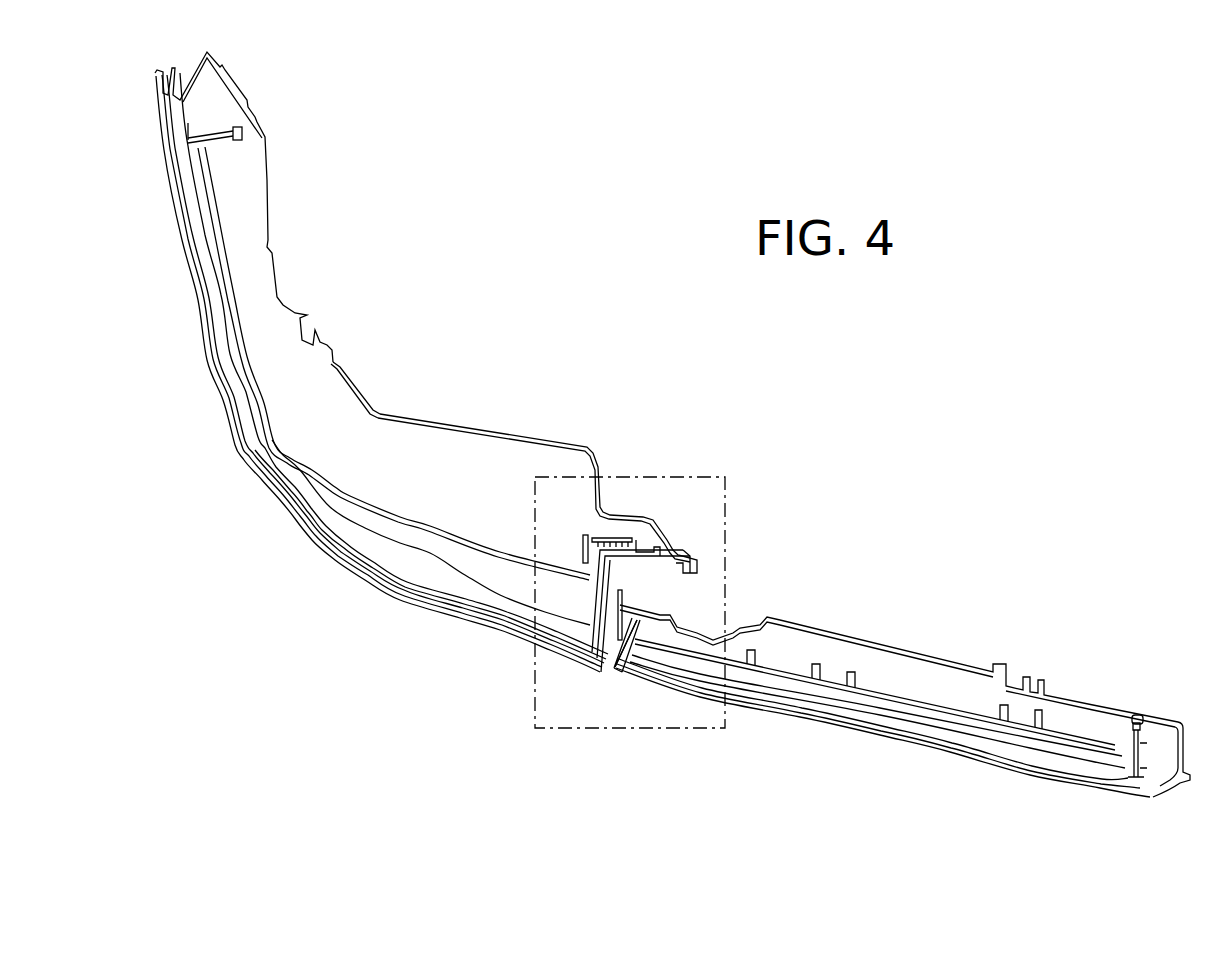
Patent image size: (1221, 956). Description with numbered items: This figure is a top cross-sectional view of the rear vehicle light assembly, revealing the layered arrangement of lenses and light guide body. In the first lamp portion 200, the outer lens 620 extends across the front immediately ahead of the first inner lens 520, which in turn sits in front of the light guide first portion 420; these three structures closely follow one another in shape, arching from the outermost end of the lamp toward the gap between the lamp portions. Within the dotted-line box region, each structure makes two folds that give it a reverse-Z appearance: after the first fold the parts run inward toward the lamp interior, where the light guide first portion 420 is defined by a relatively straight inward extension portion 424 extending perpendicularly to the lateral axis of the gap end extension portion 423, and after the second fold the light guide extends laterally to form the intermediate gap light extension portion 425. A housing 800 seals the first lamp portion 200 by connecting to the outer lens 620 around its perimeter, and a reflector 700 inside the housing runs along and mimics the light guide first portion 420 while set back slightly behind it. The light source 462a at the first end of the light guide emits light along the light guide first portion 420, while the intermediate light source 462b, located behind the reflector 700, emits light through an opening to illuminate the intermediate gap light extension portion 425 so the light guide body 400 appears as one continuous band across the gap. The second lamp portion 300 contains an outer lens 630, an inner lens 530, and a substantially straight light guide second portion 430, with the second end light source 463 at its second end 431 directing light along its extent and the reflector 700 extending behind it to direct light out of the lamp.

The first lamp portion 200 is at (258, 268).
The second lamp portion 300 is at (903, 672).
The light guide body 400 is at (380, 552).
The light guide first portion 420 is at (313, 502).
The gap end extension portion 423 is at (568, 625).
The inward extension portion 424 is at (597, 603).
The intermediate gap light extension portion 425 is at (612, 550).
The light guide second portion 430 is at (853, 695).
The second end 431 is at (1123, 747).
The light source 462a is at (257, 120).
The intermediate light source 462b is at (587, 547).
The second end light source 463 is at (1138, 718).
The first inner lens 520 is at (452, 608).
The inner lens 530 is at (775, 703).
The outer lens 620 is at (243, 458).
The outer lens 630 is at (1010, 772).
The reflector 700 is at (300, 445).
The housing 800 is at (513, 433).